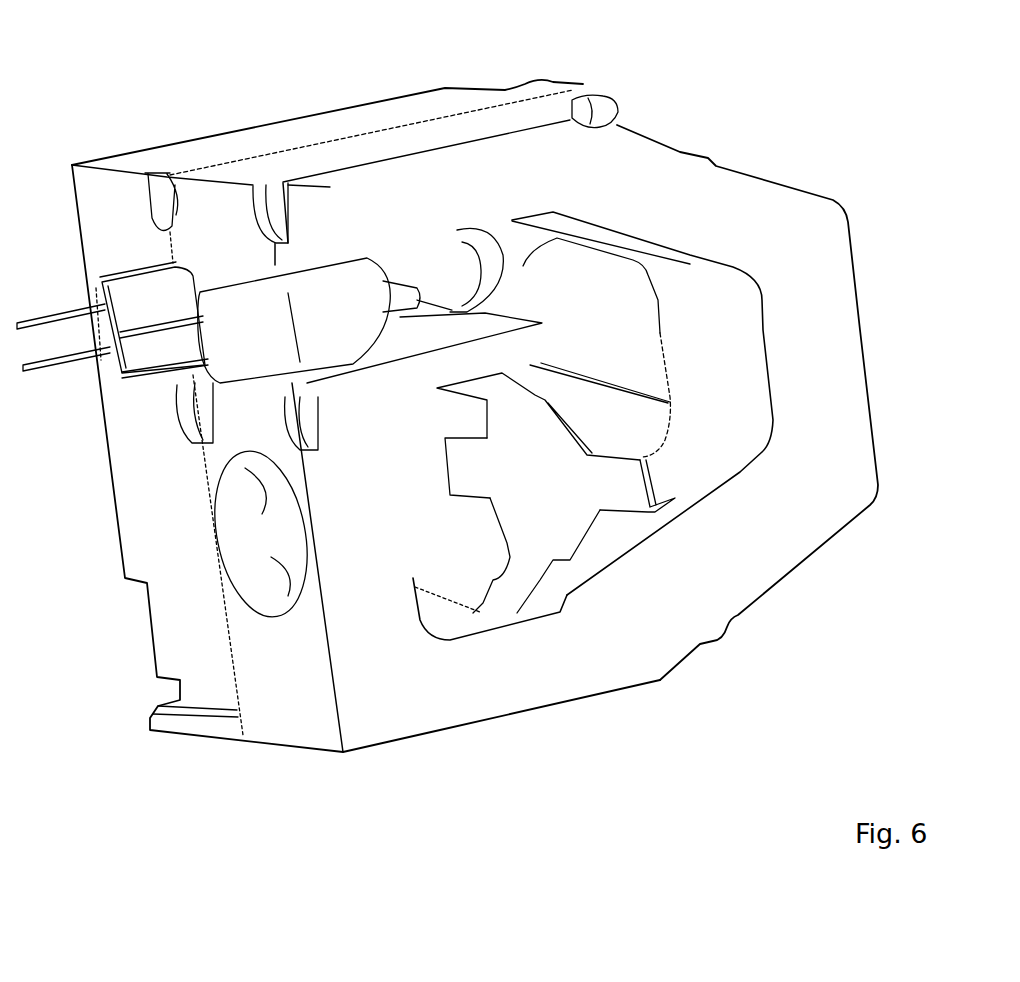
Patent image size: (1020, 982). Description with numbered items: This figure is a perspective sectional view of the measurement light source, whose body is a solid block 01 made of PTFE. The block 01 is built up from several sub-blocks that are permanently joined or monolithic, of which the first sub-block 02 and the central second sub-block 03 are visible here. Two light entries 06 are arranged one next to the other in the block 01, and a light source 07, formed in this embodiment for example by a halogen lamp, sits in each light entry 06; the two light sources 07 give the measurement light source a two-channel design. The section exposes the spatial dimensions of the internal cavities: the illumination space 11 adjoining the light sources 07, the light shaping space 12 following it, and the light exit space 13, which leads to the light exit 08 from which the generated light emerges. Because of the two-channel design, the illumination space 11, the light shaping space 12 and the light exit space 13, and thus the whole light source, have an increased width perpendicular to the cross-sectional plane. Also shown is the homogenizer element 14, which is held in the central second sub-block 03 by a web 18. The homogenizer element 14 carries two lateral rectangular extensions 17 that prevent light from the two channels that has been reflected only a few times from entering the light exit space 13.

The block 01 is at (480, 715).
The first sub-block 02 is at (388, 103).
The second sub-block 03 is at (763, 198).
The light entry 06 is at (267, 272).
The light source 07 is at (143, 287).
The light exit 08 is at (260, 540).
The illumination space 11 is at (447, 267).
The light shaping space 12 is at (697, 360).
The light exit space 13 is at (445, 537).
The homogenizer element 14 is at (540, 495).
The lateral rectangular extension 17 is at (465, 470).
The web 18 is at (575, 565).